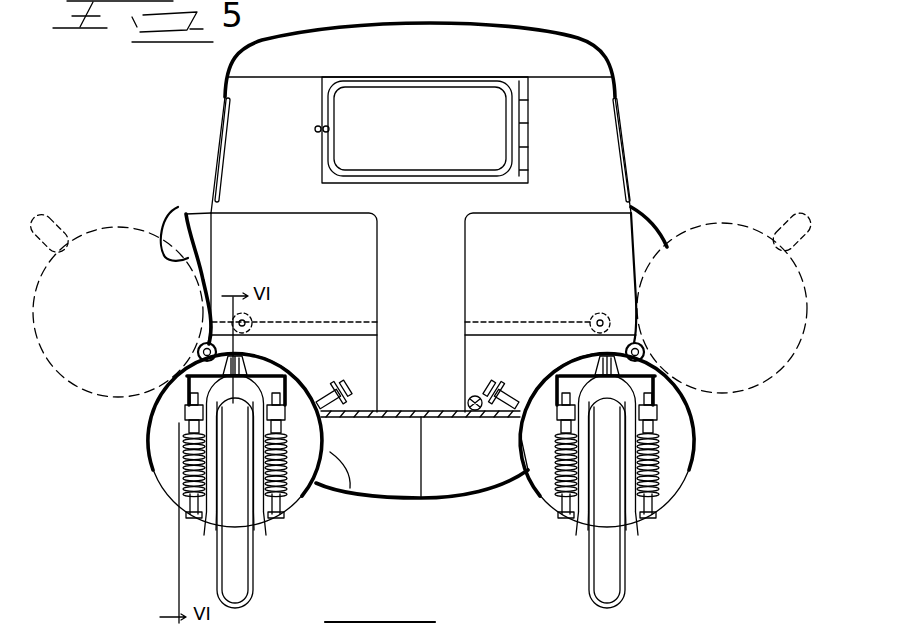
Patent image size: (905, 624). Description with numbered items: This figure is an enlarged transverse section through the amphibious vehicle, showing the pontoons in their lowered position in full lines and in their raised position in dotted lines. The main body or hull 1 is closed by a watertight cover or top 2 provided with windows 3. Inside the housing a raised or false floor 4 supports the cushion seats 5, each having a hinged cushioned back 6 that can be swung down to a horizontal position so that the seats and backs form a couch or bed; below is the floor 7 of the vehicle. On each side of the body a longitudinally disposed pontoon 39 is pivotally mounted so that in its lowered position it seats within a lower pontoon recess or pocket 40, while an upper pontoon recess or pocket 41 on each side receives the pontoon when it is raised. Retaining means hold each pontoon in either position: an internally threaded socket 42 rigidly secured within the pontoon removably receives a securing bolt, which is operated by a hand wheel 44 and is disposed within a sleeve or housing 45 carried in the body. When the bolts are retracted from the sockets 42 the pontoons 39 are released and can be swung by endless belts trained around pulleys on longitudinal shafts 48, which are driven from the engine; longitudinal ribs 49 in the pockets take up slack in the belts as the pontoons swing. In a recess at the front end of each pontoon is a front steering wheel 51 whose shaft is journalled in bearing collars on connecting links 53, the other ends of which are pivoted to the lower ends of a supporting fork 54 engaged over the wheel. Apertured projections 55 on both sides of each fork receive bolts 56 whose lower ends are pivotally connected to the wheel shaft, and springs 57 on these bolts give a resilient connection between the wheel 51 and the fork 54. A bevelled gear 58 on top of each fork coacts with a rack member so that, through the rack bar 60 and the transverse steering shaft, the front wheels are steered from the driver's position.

The main body or hull 1 is at (213, 232).
The watertight cover or top 2 is at (617, 109).
The windows 3 is at (498, 152).
The raised or false floor 4 is at (420, 399).
The cushion seats 5 is at (360, 338).
The hinged cushioned back 6 is at (295, 227).
The floor 7 is at (387, 498).
The pontoon 39 is at (178, 466).
The pontoon recess or pocket 40 is at (350, 488).
The upper pontoon recess or pocket 41 is at (177, 223).
The internally threaded socket 42 is at (520, 433).
The hand wheel 44 is at (496, 395).
The sleeve or housing 45 is at (512, 392).
The shafts 48 is at (250, 320).
The longitudinal ribs 49 is at (210, 297).
The front steering wheel 51 is at (241, 588).
The connecting links 53 is at (203, 517).
The supporting fork 54 is at (207, 463).
The apertured projections 55 is at (186, 424).
The bolts 56 is at (190, 407).
The springs 57 is at (190, 492).
The bevelled gear 58 is at (292, 368).
The rack bar 60 is at (199, 347).